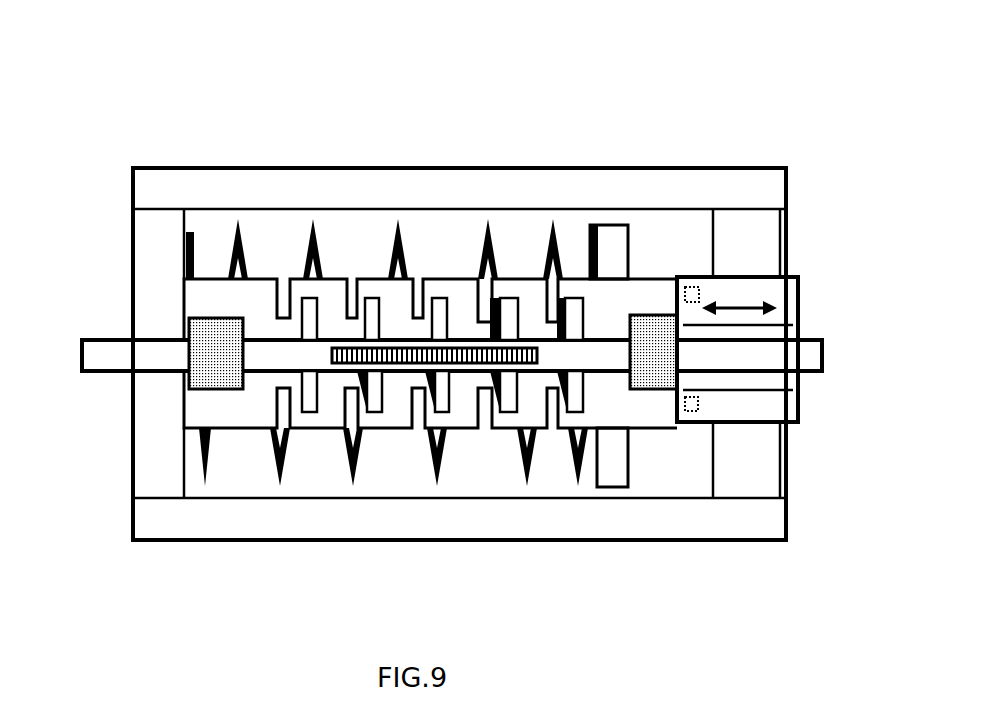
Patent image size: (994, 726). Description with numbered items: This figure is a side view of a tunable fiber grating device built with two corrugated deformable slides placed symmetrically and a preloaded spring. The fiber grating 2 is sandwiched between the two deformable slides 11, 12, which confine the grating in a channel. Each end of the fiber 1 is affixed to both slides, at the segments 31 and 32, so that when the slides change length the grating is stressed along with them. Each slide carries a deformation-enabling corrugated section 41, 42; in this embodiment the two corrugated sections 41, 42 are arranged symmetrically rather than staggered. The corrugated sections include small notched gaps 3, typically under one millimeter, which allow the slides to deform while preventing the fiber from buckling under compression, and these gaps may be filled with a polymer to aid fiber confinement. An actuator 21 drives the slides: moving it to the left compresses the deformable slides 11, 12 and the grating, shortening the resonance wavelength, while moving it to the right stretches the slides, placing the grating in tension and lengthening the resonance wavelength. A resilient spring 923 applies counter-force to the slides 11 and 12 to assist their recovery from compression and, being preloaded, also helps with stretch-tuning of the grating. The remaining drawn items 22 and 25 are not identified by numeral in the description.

The fiber 1 is at (125, 355).
The fiber grating 2 is at (426, 352).
The notched gaps 3 is at (303, 320).
The spring 923 is at (309, 318).
The deformable slide 11 is at (608, 305).
The deformable slide 12 is at (610, 395).
The actuator 21 is at (760, 287).
The sliding element 22 is at (685, 302).
The housing 25 is at (292, 515).
The fiber-affixing segment 31 is at (643, 320).
The fiber-affixing segment 32 is at (210, 345).
The corrugated section 41 is at (463, 305).
The corrugated section 42 is at (459, 390).